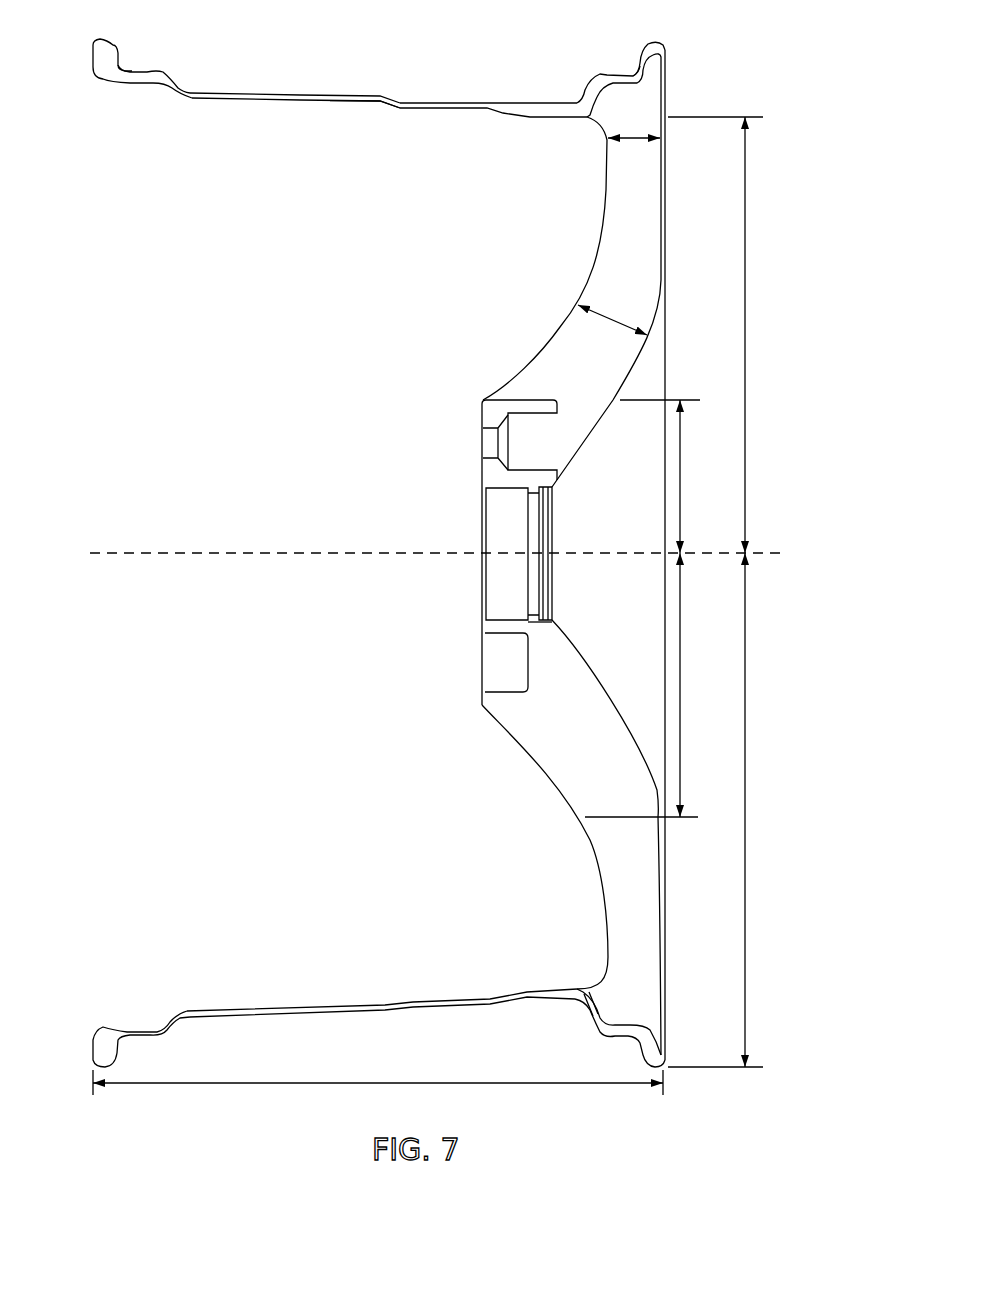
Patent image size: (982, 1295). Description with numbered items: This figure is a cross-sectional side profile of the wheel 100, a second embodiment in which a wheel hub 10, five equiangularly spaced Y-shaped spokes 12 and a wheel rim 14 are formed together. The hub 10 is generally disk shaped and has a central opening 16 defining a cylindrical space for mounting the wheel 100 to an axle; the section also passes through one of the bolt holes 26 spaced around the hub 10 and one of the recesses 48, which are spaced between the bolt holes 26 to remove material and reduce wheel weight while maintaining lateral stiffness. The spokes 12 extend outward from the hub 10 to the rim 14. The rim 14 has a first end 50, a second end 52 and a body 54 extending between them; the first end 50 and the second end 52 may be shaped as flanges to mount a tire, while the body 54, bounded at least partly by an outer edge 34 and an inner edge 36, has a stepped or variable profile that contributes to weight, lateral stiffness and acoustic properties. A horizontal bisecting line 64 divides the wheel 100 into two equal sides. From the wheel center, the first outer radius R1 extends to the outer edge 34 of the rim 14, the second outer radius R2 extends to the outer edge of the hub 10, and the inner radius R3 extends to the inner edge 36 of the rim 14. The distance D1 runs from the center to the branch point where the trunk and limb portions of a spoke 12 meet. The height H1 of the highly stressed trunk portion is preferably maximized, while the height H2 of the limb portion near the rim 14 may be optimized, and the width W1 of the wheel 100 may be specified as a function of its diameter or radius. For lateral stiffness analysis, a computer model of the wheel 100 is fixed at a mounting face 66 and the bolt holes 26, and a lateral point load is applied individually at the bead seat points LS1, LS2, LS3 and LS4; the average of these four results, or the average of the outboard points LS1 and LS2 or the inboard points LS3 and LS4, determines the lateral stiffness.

The wheel 100 is at (744, 47).
The wheel hub 10 is at (480, 697).
The Y-shaped spokes 12 is at (660, 290).
The wheel rim 14 is at (445, 102).
The central opening 16 is at (552, 532).
The bolt holes 26 is at (492, 440).
The outer edge 34 is at (346, 88).
The inner edge 36 is at (352, 103).
The recesses 48 is at (497, 668).
The first end 50 is at (647, 42).
The second end 52 is at (117, 50).
The body 54 is at (283, 98).
The horizontal bisecting line 64 is at (113, 555).
The mounting face 66 is at (470, 573).
The lateral point load point LS1 is at (637, 68).
The lateral point load point LS2 is at (638, 1040).
The lateral point load point LS3 is at (119, 1038).
The lateral point load point LS4 is at (122, 68).
The height dimension of trunk portions H1 is at (612, 326).
The height dimension of limb portions H2 is at (634, 152).
The first outer radius R1 is at (722, 810).
The second outer radius R2 is at (665, 476).
The inner radius R3 is at (722, 335).
The distance to branch point D1 is at (648, 685).
The width W1 is at (378, 1093).